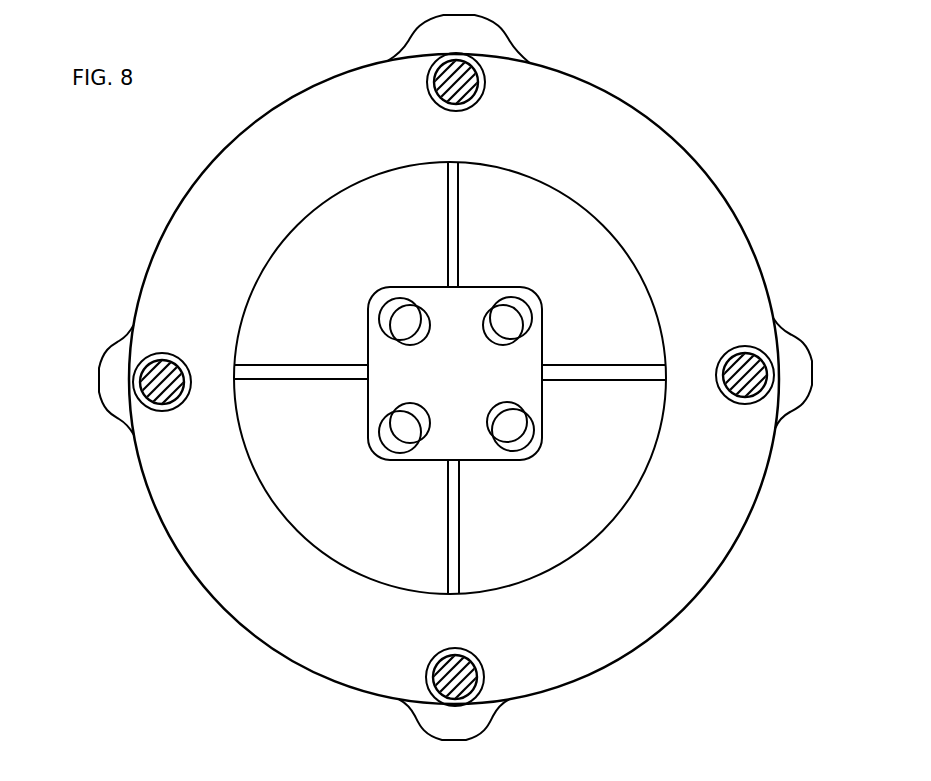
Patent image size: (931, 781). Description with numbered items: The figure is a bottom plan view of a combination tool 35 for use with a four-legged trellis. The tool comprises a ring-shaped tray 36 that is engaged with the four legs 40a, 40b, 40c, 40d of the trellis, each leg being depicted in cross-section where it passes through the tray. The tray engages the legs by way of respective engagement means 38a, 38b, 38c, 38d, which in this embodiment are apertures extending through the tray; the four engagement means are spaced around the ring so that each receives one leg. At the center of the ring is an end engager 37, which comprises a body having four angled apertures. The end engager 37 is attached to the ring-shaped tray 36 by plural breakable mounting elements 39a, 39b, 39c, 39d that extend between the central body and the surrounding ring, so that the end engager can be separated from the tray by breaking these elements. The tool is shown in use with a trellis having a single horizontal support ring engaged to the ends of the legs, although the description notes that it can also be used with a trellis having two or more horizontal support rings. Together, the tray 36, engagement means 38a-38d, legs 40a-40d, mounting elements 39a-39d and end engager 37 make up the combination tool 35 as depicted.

The combination tool 35 is at (133, 207).
The ring-shaped tray 36 is at (698, 155).
The end engager 37 is at (469, 287).
The engagement means 38a is at (430, 61).
The engagement means 38b is at (778, 422).
The engagement means 38c is at (427, 672).
The engagement means 38d is at (147, 340).
The breakable mounting element 39a is at (457, 193).
The breakable mounting element 39b is at (565, 352).
The breakable mounting element 39c is at (457, 502).
The breakable mounting element 39d is at (337, 367).
The leg 40a is at (487, 83).
The leg 40b is at (742, 347).
The leg 40c is at (472, 648).
The leg 40d is at (152, 410).